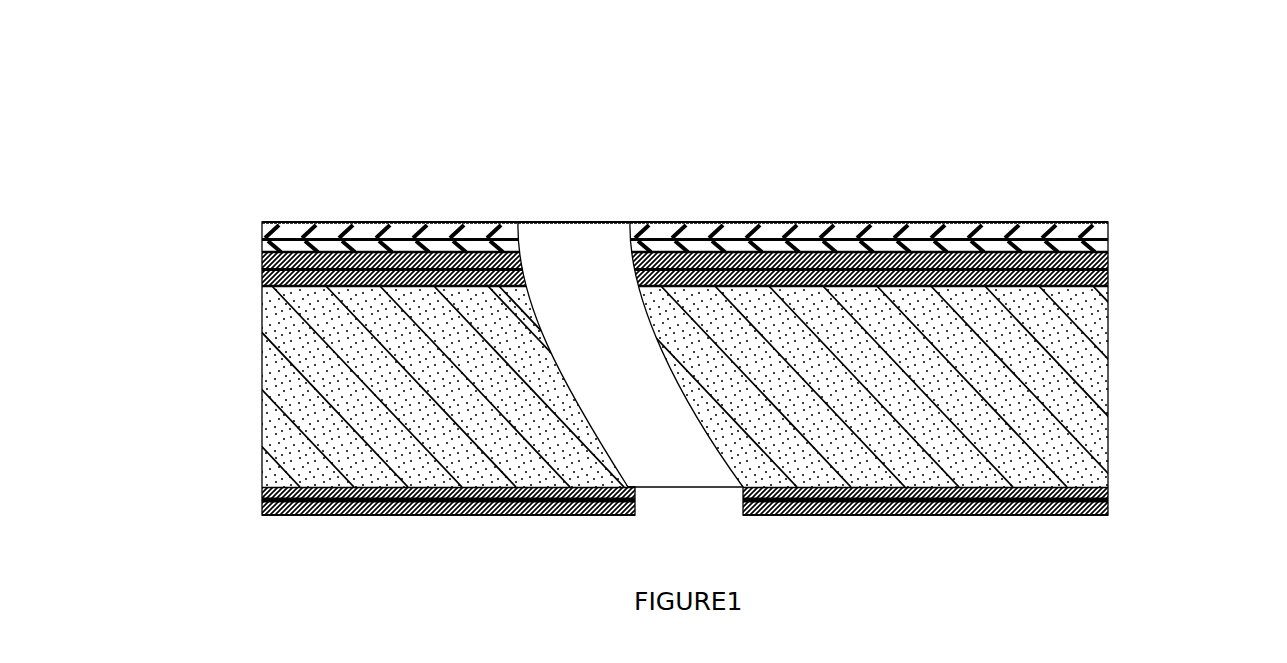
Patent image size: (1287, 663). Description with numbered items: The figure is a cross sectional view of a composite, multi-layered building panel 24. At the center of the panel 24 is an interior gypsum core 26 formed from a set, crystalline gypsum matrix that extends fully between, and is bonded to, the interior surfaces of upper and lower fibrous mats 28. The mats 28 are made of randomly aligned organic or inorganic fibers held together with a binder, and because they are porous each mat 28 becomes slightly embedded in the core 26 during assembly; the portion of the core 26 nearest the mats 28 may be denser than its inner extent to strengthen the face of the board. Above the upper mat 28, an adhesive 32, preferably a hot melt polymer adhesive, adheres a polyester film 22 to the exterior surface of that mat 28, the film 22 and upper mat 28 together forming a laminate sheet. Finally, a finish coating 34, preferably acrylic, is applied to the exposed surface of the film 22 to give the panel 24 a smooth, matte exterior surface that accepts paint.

The polyester film 22 is at (1110, 247).
The building panel 24 is at (867, 145).
The gypsum core 26 is at (262, 412).
The fibrous mats 28 is at (262, 282).
The adhesive 32 is at (262, 262).
The finish coating 34 is at (1110, 221).